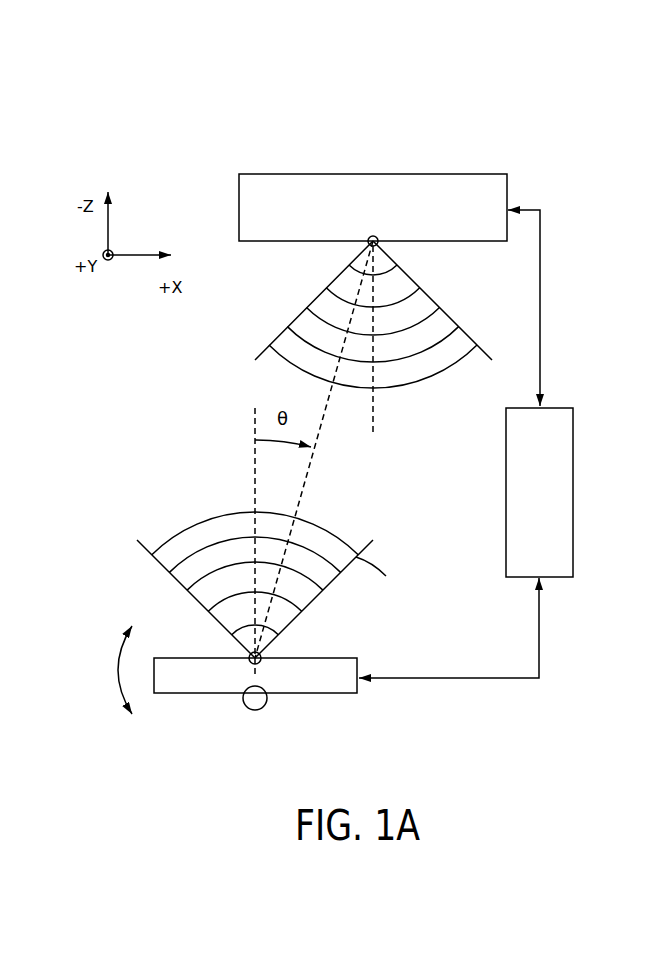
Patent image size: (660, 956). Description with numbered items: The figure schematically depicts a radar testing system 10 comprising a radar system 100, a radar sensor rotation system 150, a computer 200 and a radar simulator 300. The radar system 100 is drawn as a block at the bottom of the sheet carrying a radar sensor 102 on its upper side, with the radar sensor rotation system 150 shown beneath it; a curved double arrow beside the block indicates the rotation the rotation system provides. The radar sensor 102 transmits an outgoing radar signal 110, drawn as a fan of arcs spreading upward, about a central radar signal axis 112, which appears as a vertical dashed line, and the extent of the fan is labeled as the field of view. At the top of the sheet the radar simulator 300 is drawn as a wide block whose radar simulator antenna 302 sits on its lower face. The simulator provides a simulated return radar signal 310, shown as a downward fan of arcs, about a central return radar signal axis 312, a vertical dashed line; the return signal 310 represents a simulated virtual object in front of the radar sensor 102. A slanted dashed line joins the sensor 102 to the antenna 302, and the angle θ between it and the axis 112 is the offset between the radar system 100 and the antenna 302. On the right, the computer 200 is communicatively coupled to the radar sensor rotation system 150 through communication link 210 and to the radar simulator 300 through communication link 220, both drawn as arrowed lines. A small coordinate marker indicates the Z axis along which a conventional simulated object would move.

The radar testing system 10 is at (491, 104).
The radar system 100 is at (346, 696).
The radar sensor 102 is at (268, 652).
The outgoing radar signal 110 is at (333, 532).
The central radar signal axis 112 is at (255, 463).
The radar sensor rotation system 150 is at (239, 709).
The computer 200 is at (575, 475).
The communication link 210 is at (539, 642).
The communication link 220 is at (540, 263).
The radar simulator 300 is at (509, 182).
The radar simulator antenna 302 is at (380, 246).
The simulated return radar signal 310 is at (413, 387).
The central return radar signal axis 312 is at (375, 433).